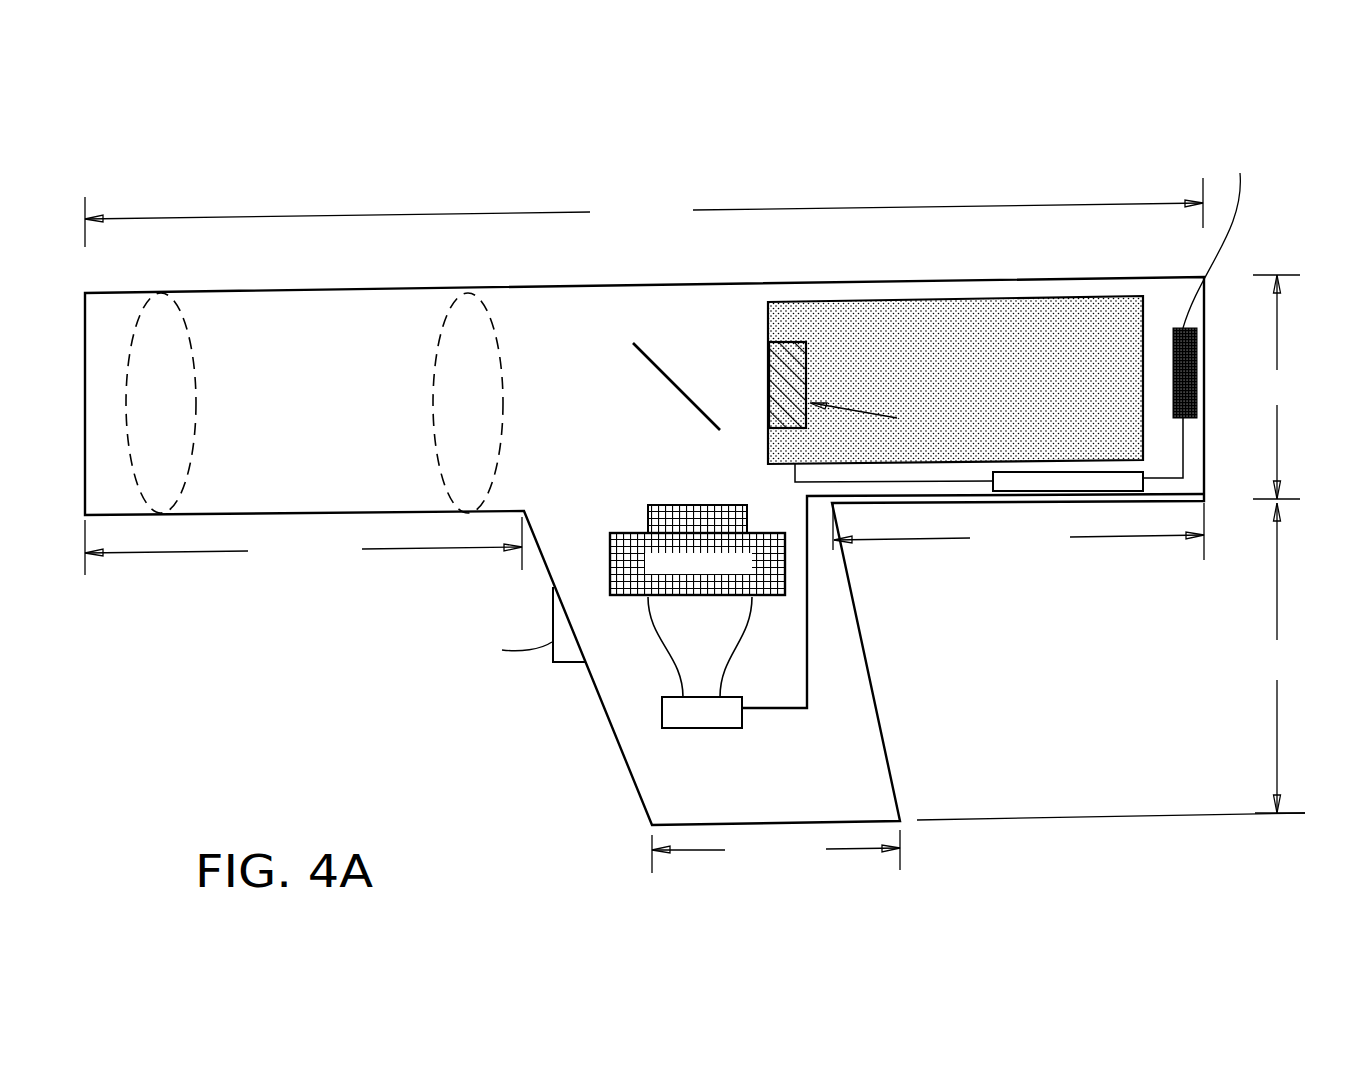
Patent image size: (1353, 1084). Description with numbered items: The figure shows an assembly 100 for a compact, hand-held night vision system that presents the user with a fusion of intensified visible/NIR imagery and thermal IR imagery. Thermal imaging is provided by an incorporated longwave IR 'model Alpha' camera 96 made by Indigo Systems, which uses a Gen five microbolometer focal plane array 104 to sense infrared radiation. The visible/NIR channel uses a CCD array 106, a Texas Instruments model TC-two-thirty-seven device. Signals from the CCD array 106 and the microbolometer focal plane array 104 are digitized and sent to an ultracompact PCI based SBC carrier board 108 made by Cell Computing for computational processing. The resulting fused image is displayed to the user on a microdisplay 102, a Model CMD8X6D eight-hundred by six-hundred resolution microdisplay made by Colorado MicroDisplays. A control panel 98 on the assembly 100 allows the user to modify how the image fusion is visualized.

The longwave IR 'model Alpha' camera 96 is at (921, 300).
The control panel 98 is at (552, 642).
The assembly 100 is at (347, 625).
The microdisplay 102 is at (1183, 328).
The microbolometer focal plane array 104 is at (767, 378).
The CCD array 106 is at (730, 730).
The SBC carrier board 108 is at (1102, 482).